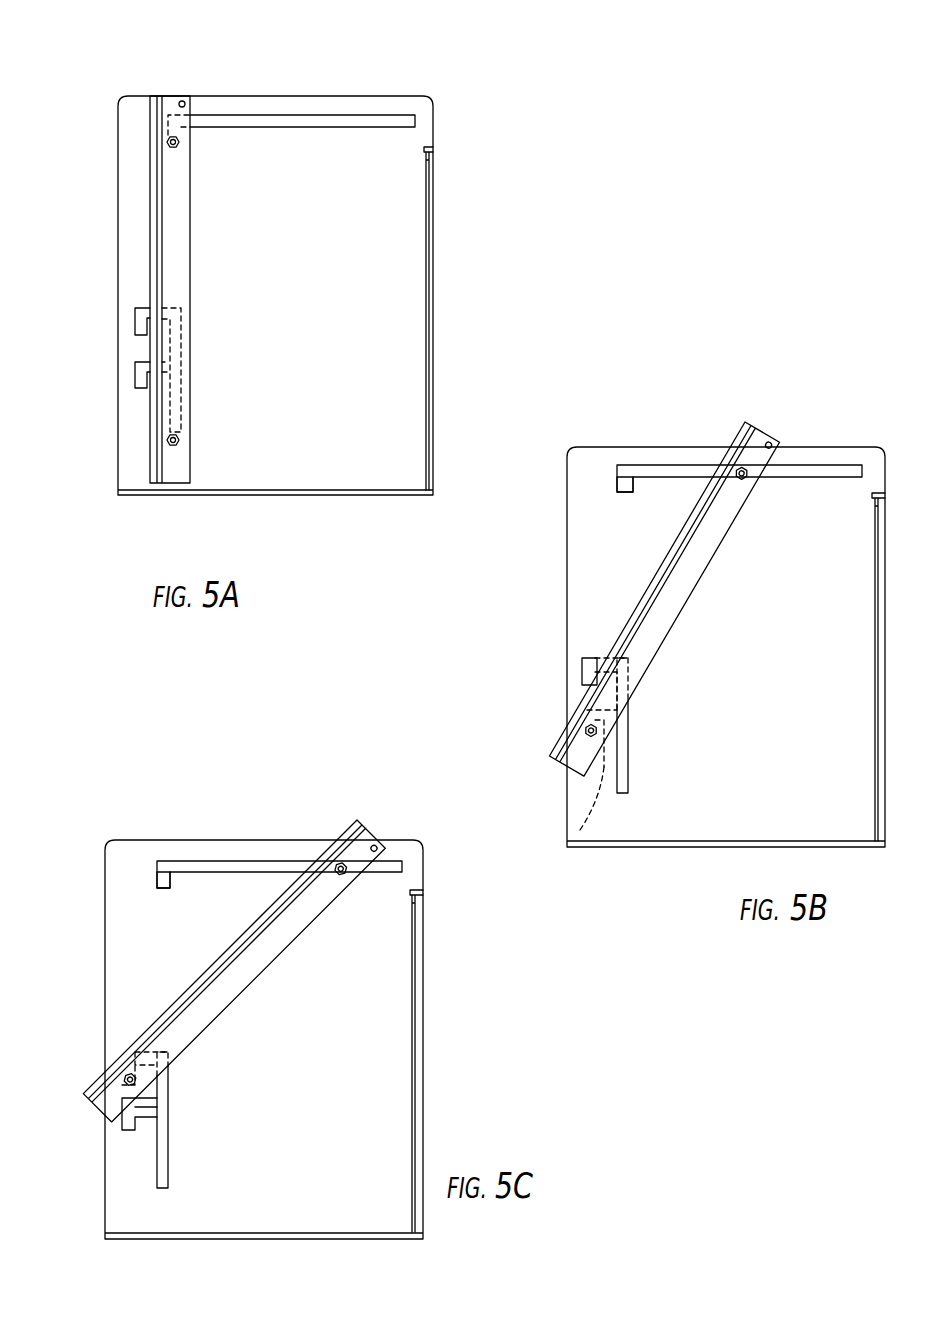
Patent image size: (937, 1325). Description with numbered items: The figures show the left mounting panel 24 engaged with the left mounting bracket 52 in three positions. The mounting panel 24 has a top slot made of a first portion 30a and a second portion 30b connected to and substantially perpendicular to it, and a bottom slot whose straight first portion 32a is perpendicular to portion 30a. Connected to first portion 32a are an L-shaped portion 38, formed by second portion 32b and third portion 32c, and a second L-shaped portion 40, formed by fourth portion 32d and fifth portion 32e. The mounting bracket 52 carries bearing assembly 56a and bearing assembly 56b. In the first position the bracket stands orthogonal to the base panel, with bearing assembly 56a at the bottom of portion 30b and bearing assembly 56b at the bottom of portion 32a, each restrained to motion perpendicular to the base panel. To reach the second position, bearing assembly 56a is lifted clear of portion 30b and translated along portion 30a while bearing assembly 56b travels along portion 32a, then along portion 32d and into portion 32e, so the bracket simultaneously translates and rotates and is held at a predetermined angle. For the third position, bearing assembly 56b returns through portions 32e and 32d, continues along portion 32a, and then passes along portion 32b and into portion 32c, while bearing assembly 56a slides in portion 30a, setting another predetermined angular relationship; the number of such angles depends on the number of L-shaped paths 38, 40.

In FIG. 5A, the left mounting panel 24 is at (414, 96).
In FIG. 5B, the left mounting panel 24 is at (592, 447).
In FIG. 5C, the left mounting panel 24 is at (410, 840).
In FIG. 5A, the top slot first portion 30a is at (283, 115).
In FIG. 5B, the top slot first portion 30a is at (795, 465).
In FIG. 5C, the top slot first portion 30a is at (249, 861).
In FIG. 5A, the top slot second portion 30b is at (168, 122).
In FIG. 5B, the top slot second portion 30b is at (615, 486).
In FIG. 5C, the top slot second portion 30b is at (157, 880).
In FIG. 5A, the bottom slot first portion 32a is at (187, 415).
In FIG. 5B, the bottom slot first portion 32a is at (630, 773).
In FIG. 5C, the bottom slot first portion 32a is at (168, 1148).
In FIG. 5B, the bottom slot second portion 32b is at (612, 652).
In FIG. 5C, the bottom slot second portion 32b is at (150, 1055).
In FIG. 5B, the bottom slot third portion 32c is at (582, 673).
In FIG. 5C, the bottom slot third portion 32c is at (135, 1062).
In FIG. 5B, the bottom slot fourth portion 32d is at (598, 790).
In FIG. 5C, the bottom slot fourth portion 32d is at (145, 1120).
In FIG. 5B, the bottom slot fifth portion 32e is at (570, 718).
In FIG. 5C, the bottom slot fifth portion 32e is at (112, 1125).
In FIG. 5C, the L-shaped portion 38 is at (70, 955).
In FIG. 5C, the second L-shaped portion 40 is at (70, 1128).
In FIG. 5A, the left mounting bracket 52 is at (192, 167).
In FIG. 5B, the left mounting bracket 52 is at (765, 422).
In FIG. 5C, the left mounting bracket 52 is at (363, 830).
In FIG. 5A, the bearing assembly 56a is at (167, 142).
In FIG. 5B, the bearing assembly 56a is at (735, 470).
In FIG. 5C, the bearing assembly 56a is at (342, 862).
In FIG. 5A, the bearing assembly 56b is at (173, 446).
In FIG. 5B, the bearing assembly 56b is at (582, 738).
In FIG. 5C, the bearing assembly 56b is at (124, 1077).